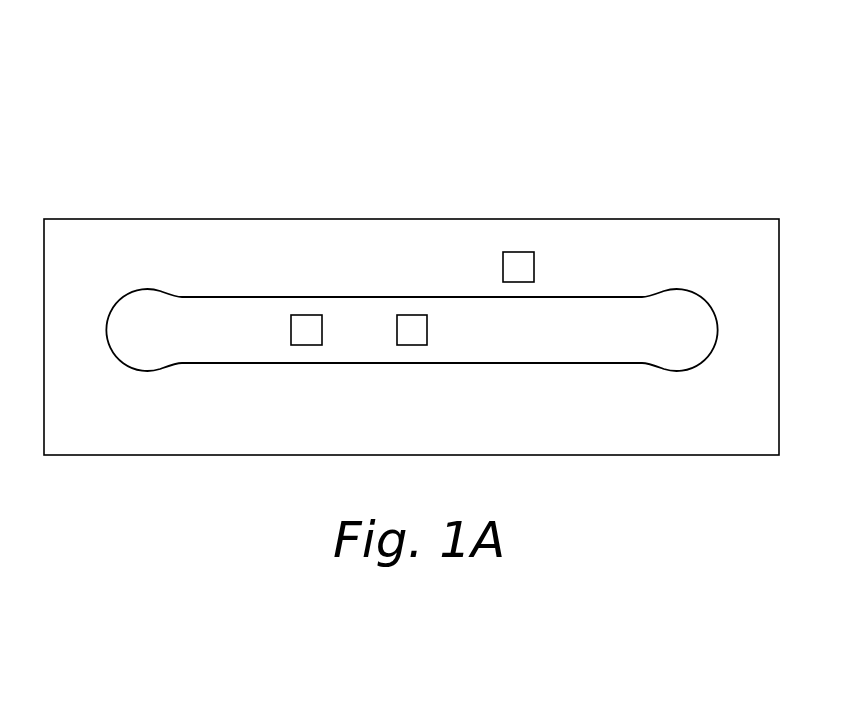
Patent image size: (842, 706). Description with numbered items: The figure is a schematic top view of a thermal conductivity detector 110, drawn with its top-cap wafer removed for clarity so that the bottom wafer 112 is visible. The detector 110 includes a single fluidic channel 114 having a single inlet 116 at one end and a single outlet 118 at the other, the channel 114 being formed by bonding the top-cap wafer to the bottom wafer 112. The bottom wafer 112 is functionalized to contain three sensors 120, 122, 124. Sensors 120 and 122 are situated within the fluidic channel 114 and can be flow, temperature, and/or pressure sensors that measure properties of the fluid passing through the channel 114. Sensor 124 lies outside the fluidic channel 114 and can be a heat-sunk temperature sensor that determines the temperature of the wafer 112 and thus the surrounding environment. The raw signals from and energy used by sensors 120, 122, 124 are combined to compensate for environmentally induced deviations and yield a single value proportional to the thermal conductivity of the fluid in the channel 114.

The thermal conductivity detector 110 is at (170, 97).
The bottom wafer 112 is at (276, 225).
The fluidic channel 114 is at (360, 304).
The inlet 116 is at (148, 318).
The outlet 118 is at (676, 318).
The sensor 120 is at (295, 330).
The sensor 122 is at (427, 330).
The sensor 124 is at (534, 266).